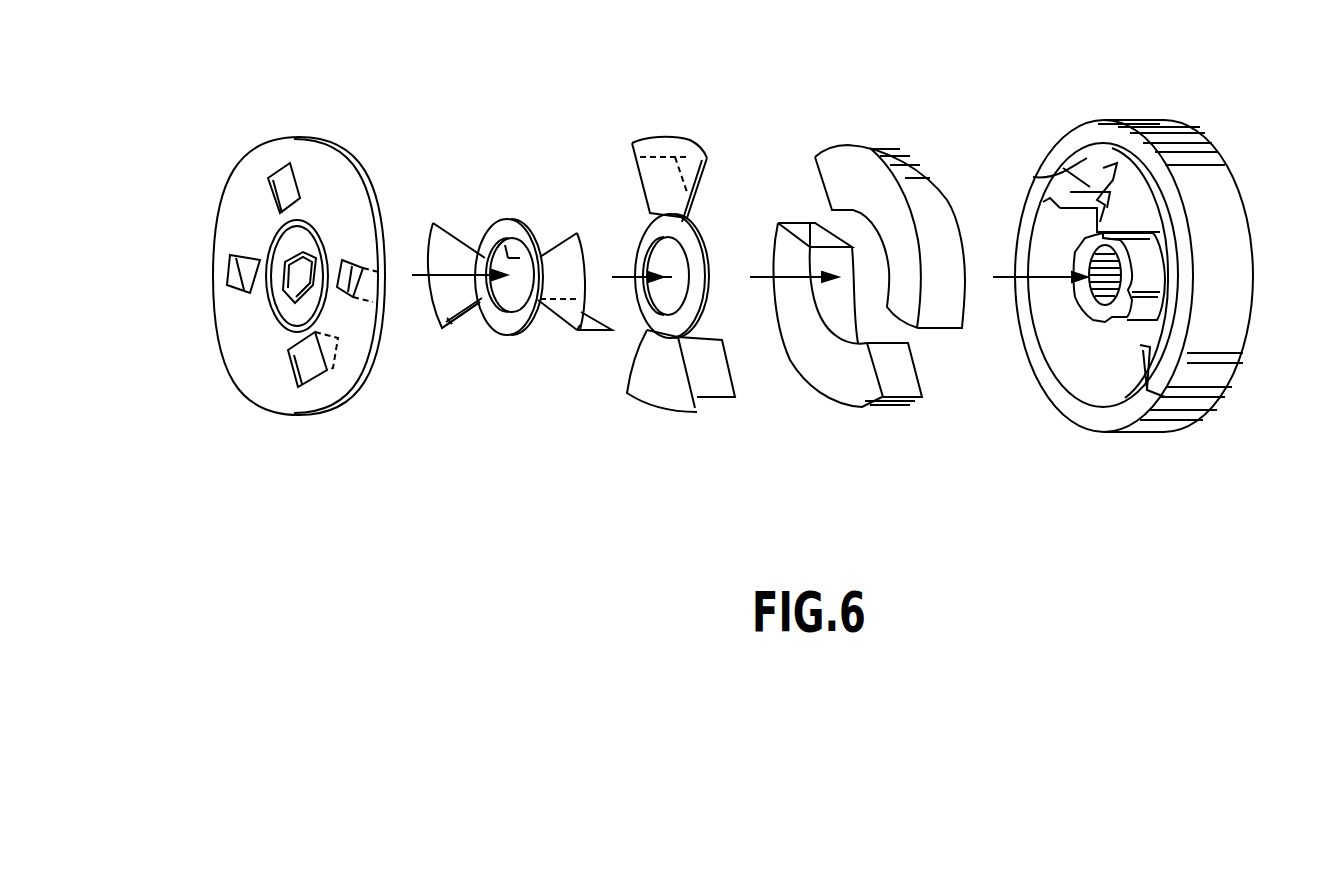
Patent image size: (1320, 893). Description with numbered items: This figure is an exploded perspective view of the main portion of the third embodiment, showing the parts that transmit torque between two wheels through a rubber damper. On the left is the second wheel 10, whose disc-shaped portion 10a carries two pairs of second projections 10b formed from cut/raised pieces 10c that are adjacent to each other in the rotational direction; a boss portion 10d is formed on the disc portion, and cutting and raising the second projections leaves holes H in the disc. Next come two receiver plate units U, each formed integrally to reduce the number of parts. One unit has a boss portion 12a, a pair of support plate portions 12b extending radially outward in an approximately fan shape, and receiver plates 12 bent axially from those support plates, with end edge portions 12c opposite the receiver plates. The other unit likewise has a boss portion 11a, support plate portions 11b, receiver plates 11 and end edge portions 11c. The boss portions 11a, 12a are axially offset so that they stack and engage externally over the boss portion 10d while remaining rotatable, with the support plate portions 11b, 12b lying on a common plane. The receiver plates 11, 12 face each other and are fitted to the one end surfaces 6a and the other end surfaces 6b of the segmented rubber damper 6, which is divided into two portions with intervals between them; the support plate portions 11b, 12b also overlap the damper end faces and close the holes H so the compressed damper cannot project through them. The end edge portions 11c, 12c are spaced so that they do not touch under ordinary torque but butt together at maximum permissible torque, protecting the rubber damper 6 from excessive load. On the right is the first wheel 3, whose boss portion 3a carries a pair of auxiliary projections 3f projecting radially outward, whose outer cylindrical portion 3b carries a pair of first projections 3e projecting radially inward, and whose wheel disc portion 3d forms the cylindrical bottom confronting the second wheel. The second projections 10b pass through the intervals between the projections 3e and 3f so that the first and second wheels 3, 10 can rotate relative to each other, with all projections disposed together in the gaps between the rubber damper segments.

The first wheel 3 is at (1154, 239).
The boss portion 3a is at (1148, 272).
The outer cylindrical portion 3b is at (1087, 160).
The wheel disc portion 3d is at (1147, 200).
The first projections 3e is at (1033, 177).
The auxiliary projections 3f is at (1103, 245).
The rubber damper 6 is at (873, 268).
The one end surfaces 6a is at (817, 177).
The other end surfaces 6b is at (813, 230).
The second wheel 10 is at (311, 113).
The disc-shaped portion 10a is at (243, 190).
The second projections 10b is at (320, 222).
The cut/raised pieces 10c is at (300, 217).
The boss portion 10d is at (287, 312).
The holes H is at (269, 183).
The receiver plates 11 is at (662, 288).
The boss portion 11a is at (697, 233).
The support plate portions 11b is at (690, 160).
The end edge portions 11c is at (705, 177).
The receiver plates 12 is at (524, 307).
The boss portion 12a is at (507, 230).
The support plate portions 12b is at (571, 254).
The end edge portions 12c is at (540, 220).
The receiver plate unit U is at (512, 357).